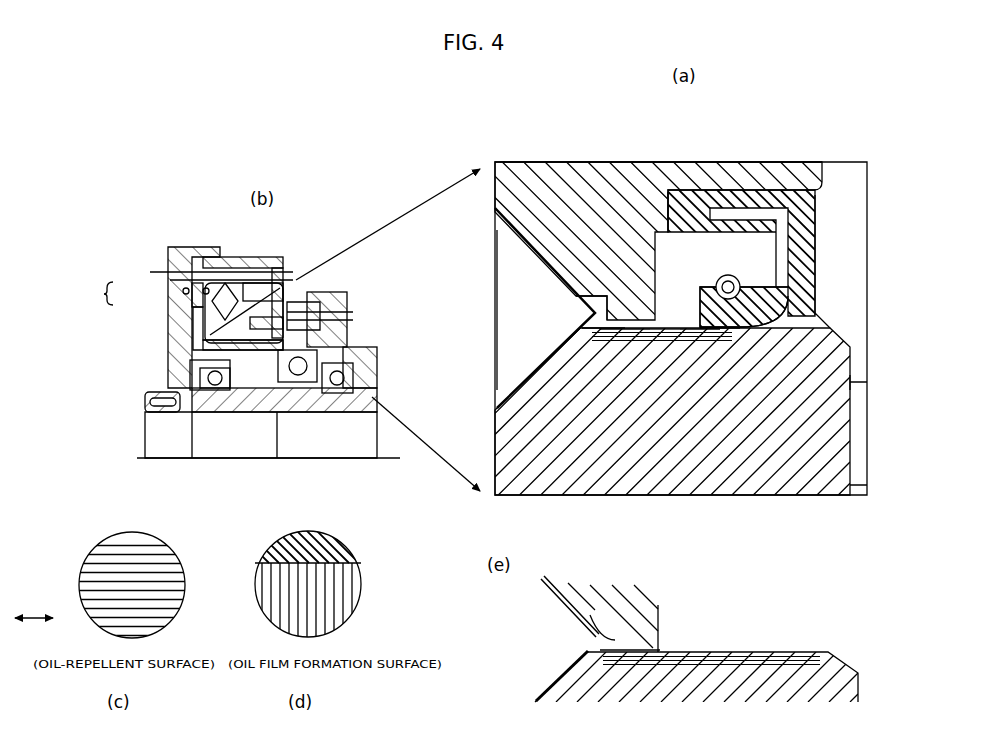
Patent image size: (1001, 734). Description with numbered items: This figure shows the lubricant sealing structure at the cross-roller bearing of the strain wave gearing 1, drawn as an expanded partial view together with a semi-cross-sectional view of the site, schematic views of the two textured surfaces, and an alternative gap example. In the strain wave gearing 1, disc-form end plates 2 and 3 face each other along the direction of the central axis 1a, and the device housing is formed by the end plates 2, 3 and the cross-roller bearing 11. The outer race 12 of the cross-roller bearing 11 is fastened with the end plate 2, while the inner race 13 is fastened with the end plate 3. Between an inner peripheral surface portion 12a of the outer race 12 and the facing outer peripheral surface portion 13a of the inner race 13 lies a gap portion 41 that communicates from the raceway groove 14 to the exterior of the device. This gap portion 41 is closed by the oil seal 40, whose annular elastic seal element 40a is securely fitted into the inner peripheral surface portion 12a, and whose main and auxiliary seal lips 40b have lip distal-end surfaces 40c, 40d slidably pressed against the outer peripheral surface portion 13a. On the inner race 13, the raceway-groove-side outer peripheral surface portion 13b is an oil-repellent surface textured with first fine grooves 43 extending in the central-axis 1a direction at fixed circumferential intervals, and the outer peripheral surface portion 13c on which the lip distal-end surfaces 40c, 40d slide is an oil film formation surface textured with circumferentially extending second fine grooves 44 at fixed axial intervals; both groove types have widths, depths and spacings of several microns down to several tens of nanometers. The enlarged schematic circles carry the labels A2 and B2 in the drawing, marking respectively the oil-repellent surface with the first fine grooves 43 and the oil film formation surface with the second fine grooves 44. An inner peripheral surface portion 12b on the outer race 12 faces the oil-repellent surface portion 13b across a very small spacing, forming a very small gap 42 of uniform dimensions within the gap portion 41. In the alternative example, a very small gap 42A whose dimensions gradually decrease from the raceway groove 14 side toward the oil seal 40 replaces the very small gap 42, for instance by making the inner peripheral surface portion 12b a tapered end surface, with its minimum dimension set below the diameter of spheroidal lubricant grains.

The strain wave gearing 1 is at (127, 243).
The central axis 1a is at (130, 452).
The end plate 2 is at (165, 358).
The end plate 3 is at (352, 332).
The cross-roller bearing 11 is at (99, 293).
The outer race 12 is at (838, 170).
The inner peripheral surface portion 12a is at (666, 190).
The inner peripheral surface portion 12b is at (612, 348).
The inner race 13 is at (852, 340).
The outer peripheral surface portion 13a is at (656, 330).
The outer peripheral surface portion 13b is at (633, 330).
The outer peripheral surface portion 13c is at (695, 330).
The raceway groove 14 is at (524, 292).
The oil seal 40 is at (830, 266).
The seal element 40a is at (816, 238).
The seal lips 40b is at (706, 318).
The lip distal-end surface 40c is at (852, 382).
The lip distal-end surface 40d is at (832, 330).
The gap portion 41 is at (571, 163).
The very small gap 42 is at (618, 318).
The very small gap 42A is at (660, 648).
The first fine grooves 43 is at (147, 546).
The second fine grooves 44 is at (345, 585).
The oil-repellent region A2 is at (606, 331).
The oil film formation region B2 is at (722, 342).